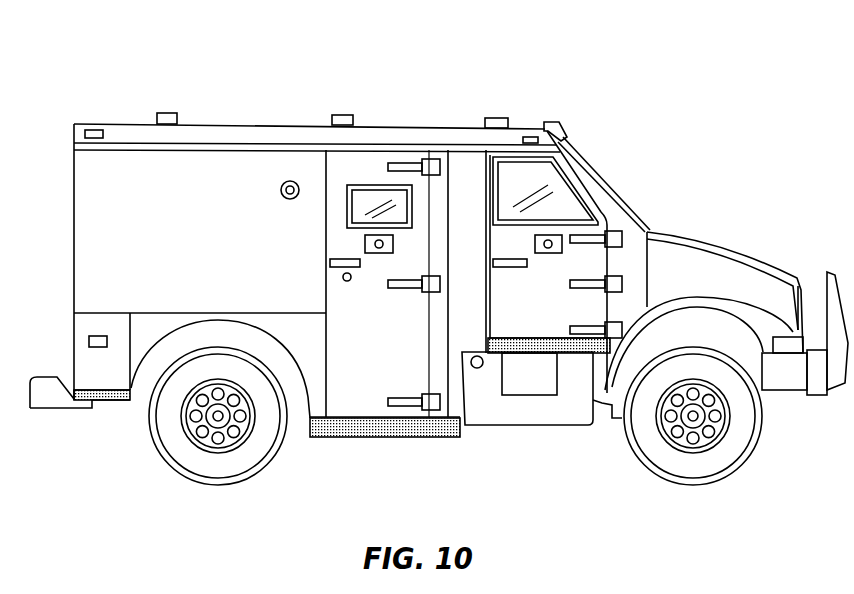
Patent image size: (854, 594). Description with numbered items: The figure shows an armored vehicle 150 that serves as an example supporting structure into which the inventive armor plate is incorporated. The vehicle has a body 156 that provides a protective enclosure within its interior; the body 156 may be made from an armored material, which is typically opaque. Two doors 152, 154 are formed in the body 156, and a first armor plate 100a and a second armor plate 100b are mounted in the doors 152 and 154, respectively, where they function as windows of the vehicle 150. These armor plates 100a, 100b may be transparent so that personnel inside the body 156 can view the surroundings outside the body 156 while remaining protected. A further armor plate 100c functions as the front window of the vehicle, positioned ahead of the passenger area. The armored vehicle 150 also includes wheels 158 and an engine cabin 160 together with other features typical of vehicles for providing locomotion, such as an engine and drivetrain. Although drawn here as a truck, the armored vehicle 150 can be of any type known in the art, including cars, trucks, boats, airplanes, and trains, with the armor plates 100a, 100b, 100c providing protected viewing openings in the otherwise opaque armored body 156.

The armored vehicle 150 is at (678, 136).
The door 152 is at (600, 255).
The door 154 is at (410, 157).
The body 156 is at (262, 124).
The wheels 158 is at (180, 459).
The engine cabin 160 is at (727, 243).
The first armor plate 100a is at (518, 167).
The second armor plate 100b is at (368, 190).
The armor plate 100c is at (617, 187).